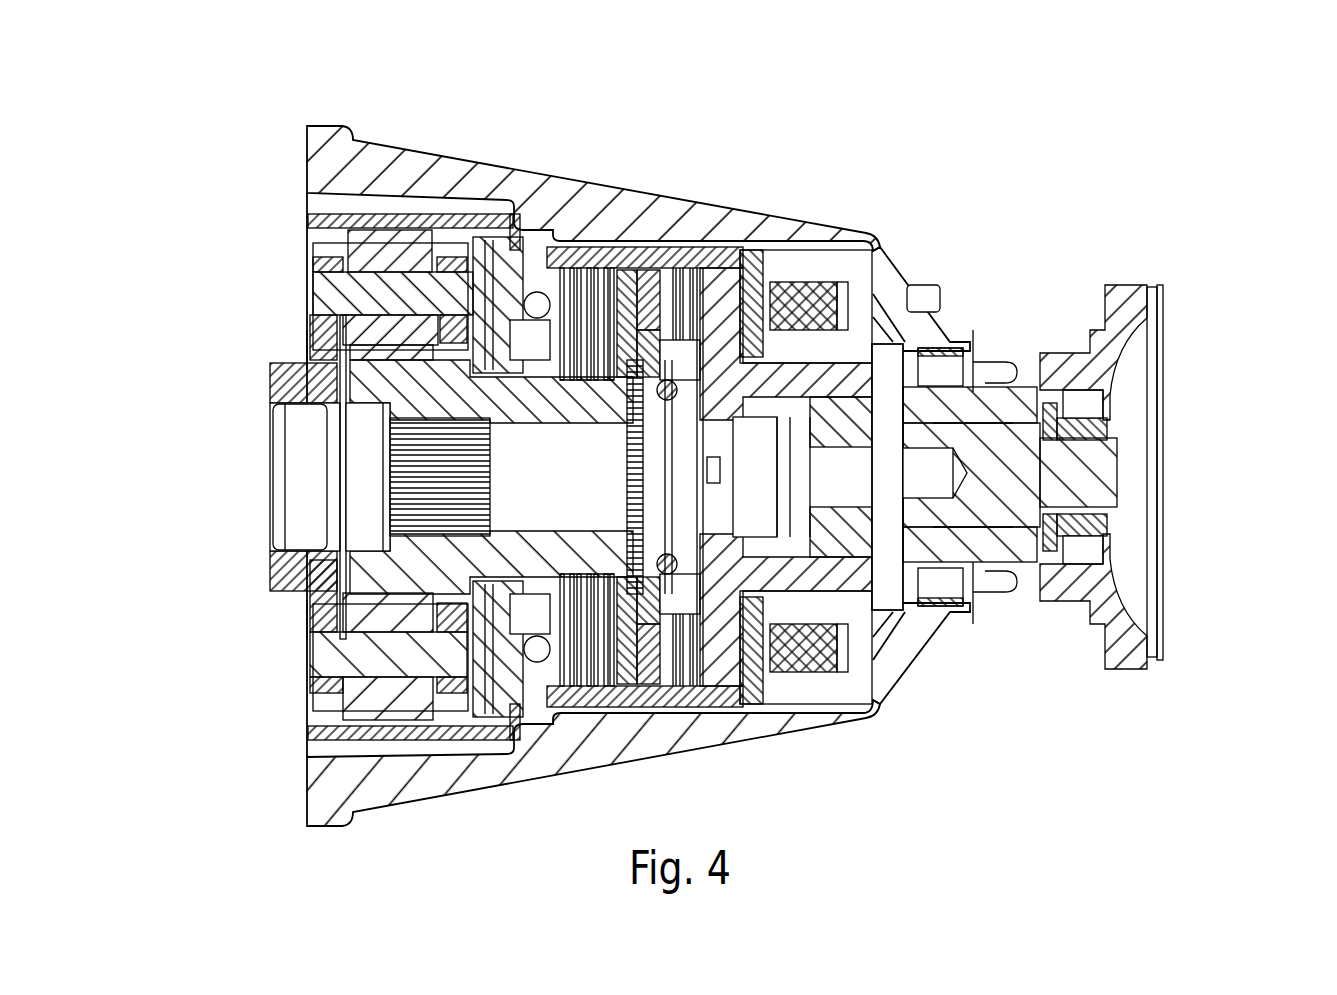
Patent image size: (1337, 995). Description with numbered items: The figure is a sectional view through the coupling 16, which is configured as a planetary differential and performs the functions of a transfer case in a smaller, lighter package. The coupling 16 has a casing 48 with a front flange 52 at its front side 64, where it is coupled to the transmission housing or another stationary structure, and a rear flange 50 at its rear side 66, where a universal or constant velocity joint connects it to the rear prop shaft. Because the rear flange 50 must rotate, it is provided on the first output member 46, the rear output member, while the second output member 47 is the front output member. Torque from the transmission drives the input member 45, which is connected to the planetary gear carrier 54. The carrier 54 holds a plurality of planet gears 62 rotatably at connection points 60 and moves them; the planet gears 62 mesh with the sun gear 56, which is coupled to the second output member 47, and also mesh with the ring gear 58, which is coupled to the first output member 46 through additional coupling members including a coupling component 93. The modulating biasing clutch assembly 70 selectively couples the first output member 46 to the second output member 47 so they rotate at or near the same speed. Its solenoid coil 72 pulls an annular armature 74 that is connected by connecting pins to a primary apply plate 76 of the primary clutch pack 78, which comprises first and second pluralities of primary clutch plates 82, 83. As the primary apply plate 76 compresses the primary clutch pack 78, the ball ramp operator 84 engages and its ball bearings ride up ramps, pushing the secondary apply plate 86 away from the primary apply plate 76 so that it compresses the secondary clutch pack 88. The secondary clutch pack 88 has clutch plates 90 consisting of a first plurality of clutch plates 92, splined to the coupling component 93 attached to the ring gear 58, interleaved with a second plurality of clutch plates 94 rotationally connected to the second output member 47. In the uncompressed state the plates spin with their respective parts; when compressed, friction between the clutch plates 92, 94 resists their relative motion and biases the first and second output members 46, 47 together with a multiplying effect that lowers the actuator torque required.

The coupling 16 is at (800, 152).
The input member 45 is at (305, 623).
The first output member 46 is at (1157, 648).
The second output member 47 is at (268, 447).
The casing 48 is at (640, 262).
The rear flange 50 is at (1128, 312).
The front flange 52 is at (330, 160).
The planetary gear carrier 54 is at (318, 335).
The sun gear 56 is at (383, 565).
The ring gear 58 is at (378, 220).
The connection points 60 is at (318, 287).
The planet gears 62 is at (405, 255).
The front side 64 is at (248, 352).
The rear side 66 is at (1187, 381).
The modulating biasing clutch assembly 70 is at (668, 238).
The solenoid coil 72 is at (836, 280).
The annular armature 74 is at (820, 280).
The primary apply plate 76 is at (650, 265).
The primary clutch pack 78 is at (676, 290).
The first plurality of primary clutch plates 82 is at (706, 280).
The second plurality of primary clutch plates 83 is at (697, 285).
The ball ramp operator 84 is at (755, 275).
The secondary apply plate 86 is at (617, 262).
The secondary clutch pack 88 is at (577, 258).
The clutch plates 90 is at (587, 253).
The first plurality of clutch plates 92 is at (593, 253).
The coupling component 93 is at (573, 693).
The second plurality of clutch plates 94 is at (337, 387).